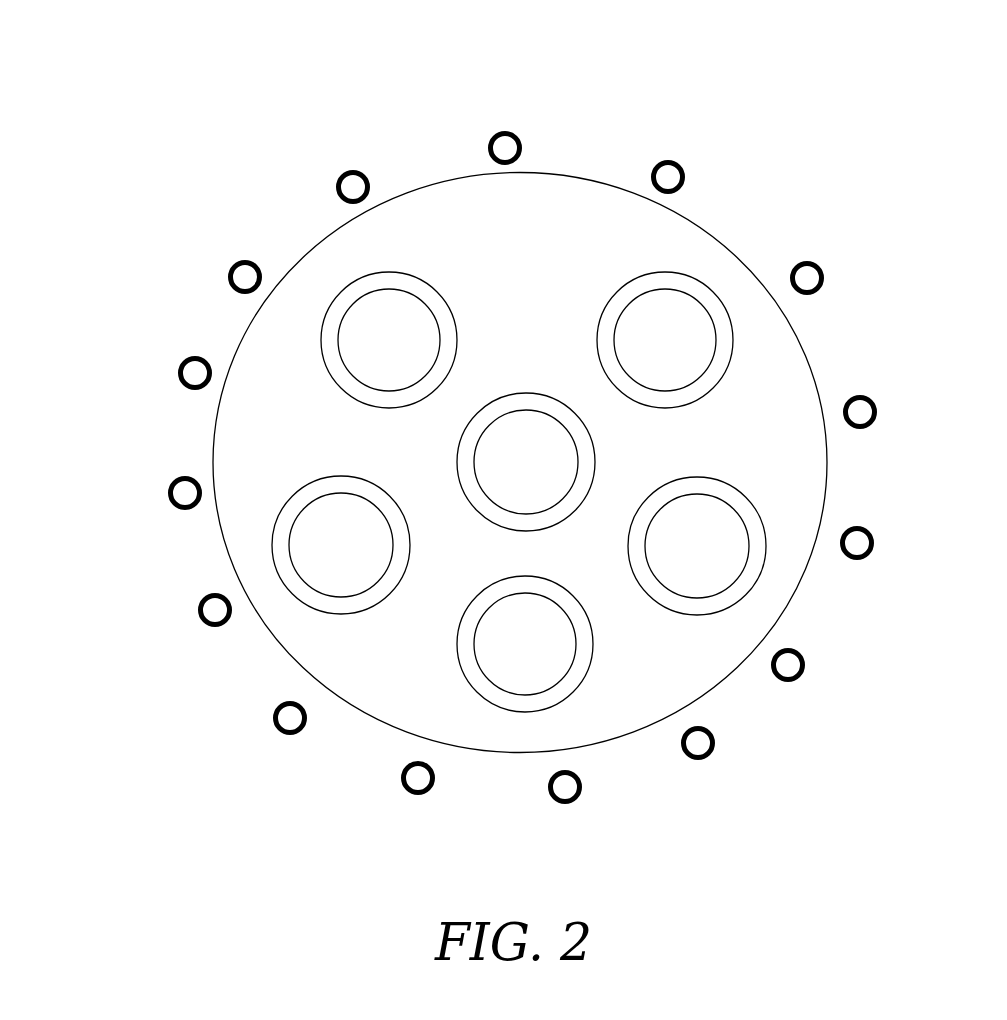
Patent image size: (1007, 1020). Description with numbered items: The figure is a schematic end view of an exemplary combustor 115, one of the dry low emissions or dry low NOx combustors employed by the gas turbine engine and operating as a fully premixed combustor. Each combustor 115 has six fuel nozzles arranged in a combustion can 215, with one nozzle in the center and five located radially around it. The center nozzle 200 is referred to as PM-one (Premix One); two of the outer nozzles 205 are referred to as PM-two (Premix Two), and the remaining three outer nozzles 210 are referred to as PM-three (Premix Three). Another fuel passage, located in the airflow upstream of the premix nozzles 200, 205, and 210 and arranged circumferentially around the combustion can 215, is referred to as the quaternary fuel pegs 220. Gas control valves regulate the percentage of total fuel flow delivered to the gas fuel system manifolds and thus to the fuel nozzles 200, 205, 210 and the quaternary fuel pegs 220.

The combustor 115 is at (589, 452).
The center nozzle 200 is at (482, 512).
The outer nozzles 205 is at (325, 478).
The outer nozzles 210 is at (333, 377).
The combustion can 215 is at (378, 723).
The quaternary fuel pegs 220 is at (810, 258).